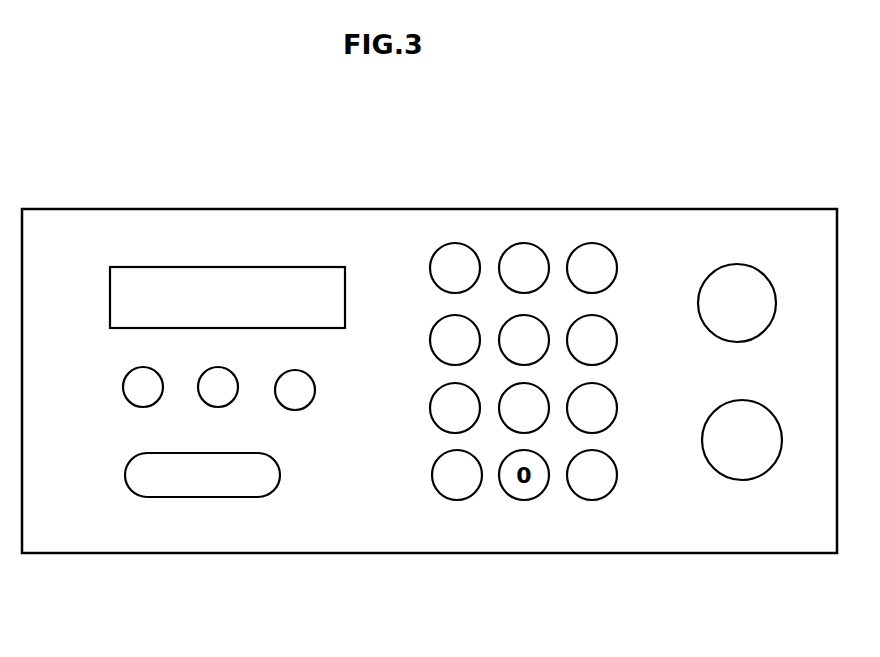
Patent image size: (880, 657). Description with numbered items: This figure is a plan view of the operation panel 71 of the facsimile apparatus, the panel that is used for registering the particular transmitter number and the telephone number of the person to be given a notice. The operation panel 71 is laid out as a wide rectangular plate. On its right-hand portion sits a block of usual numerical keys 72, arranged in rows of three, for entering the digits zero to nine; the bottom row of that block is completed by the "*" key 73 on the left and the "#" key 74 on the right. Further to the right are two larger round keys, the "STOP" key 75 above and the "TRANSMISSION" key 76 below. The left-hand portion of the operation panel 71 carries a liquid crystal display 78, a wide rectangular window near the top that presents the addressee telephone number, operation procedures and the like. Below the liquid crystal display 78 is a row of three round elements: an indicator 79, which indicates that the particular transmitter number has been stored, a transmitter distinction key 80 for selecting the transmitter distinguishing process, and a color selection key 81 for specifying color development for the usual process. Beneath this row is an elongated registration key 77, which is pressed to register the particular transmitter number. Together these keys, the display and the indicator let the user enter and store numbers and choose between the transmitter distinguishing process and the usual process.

The operation panel 71 is at (450, 208).
The numerical keys 72 is at (490, 303).
The "*" key 73 is at (457, 500).
The "#" key 74 is at (593, 500).
The "STOP" key 75 is at (733, 263).
The "TRANSMISSION" key 76 is at (733, 480).
The registration key 77 is at (127, 468).
The liquid crystal display 78 is at (115, 267).
The indicator 79 is at (123, 390).
The transmitter distinction key 80 is at (218, 407).
The color selection key 81 is at (302, 409).